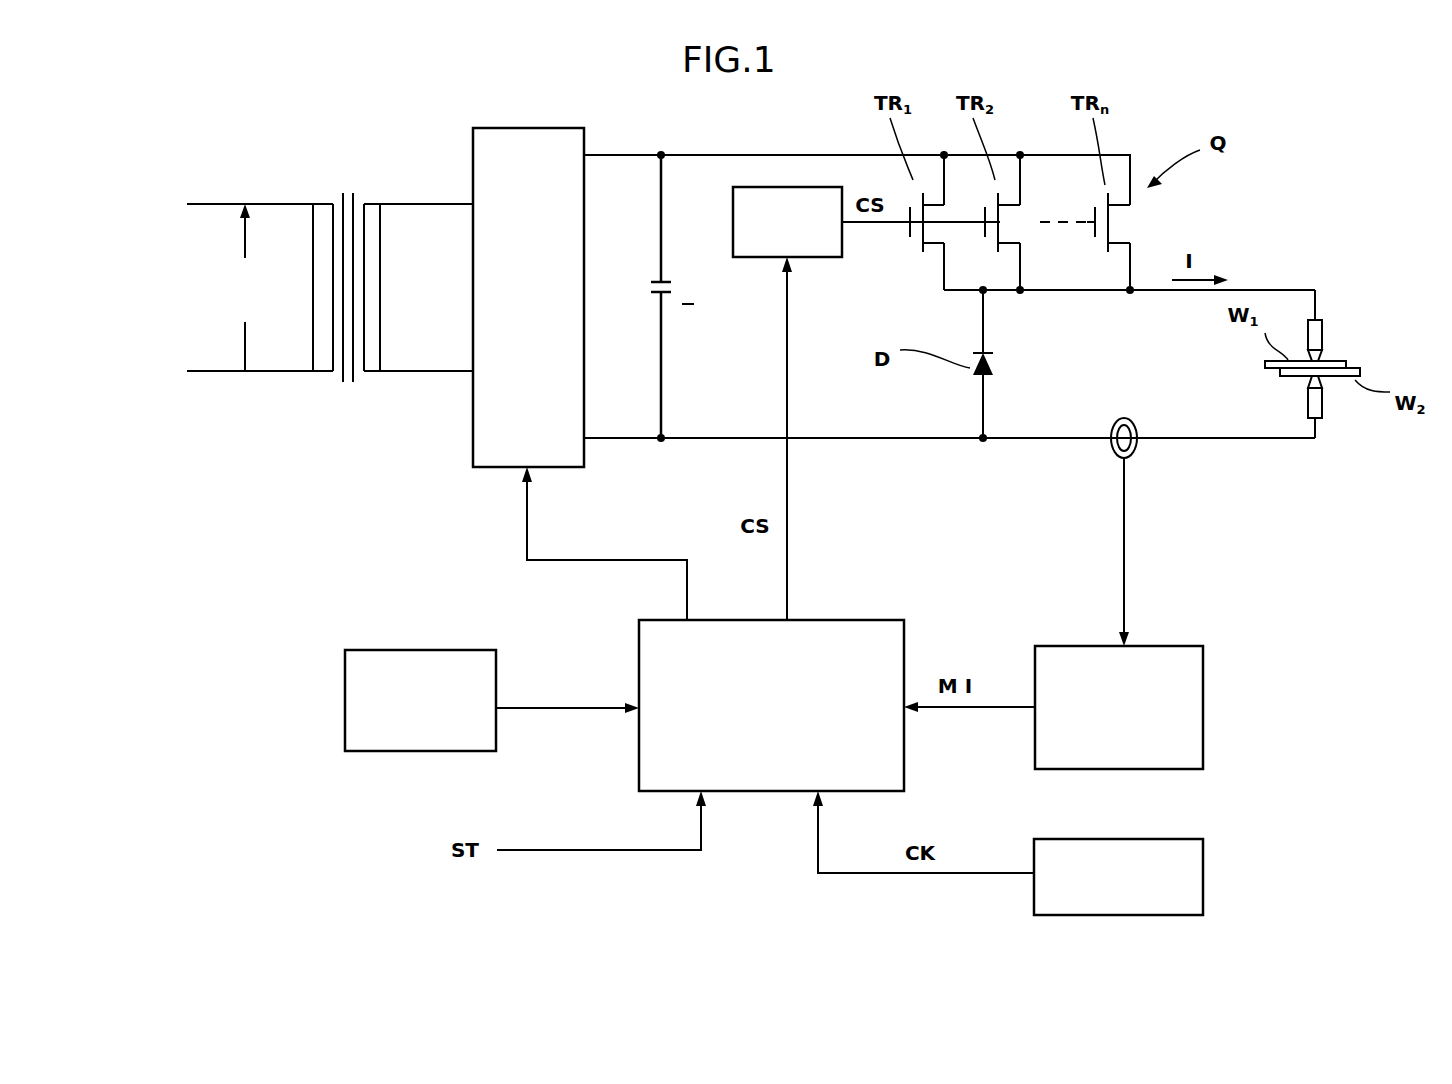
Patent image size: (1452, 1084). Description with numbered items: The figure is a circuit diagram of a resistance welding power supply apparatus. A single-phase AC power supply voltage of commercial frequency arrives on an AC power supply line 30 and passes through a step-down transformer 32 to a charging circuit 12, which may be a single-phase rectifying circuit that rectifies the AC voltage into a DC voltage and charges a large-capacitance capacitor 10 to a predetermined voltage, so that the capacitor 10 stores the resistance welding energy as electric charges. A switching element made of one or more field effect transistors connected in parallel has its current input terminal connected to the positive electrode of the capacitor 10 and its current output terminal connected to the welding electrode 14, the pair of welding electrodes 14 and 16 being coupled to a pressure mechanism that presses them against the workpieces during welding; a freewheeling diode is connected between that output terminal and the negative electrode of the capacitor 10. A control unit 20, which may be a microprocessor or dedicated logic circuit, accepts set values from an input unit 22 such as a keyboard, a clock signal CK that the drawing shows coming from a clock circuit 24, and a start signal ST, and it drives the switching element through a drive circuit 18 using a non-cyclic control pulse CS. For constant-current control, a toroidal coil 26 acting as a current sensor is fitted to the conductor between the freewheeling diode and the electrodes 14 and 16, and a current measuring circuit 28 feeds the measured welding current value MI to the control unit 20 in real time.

The capacitor 10 is at (646, 288).
The charging circuit 12 is at (540, 128).
The welding electrode 14 is at (1323, 341).
The welding electrode 16 is at (1323, 402).
The drive circuit 18 is at (733, 215).
The control unit 20 is at (870, 620).
The input unit 22 is at (383, 650).
The clock circuit 24 is at (1203, 862).
The toroidal coil 26 is at (1118, 420).
The current measuring circuit 28 is at (1203, 668).
The AC power supply line 30 is at (296, 202).
The step-down transformer 32 is at (348, 178).